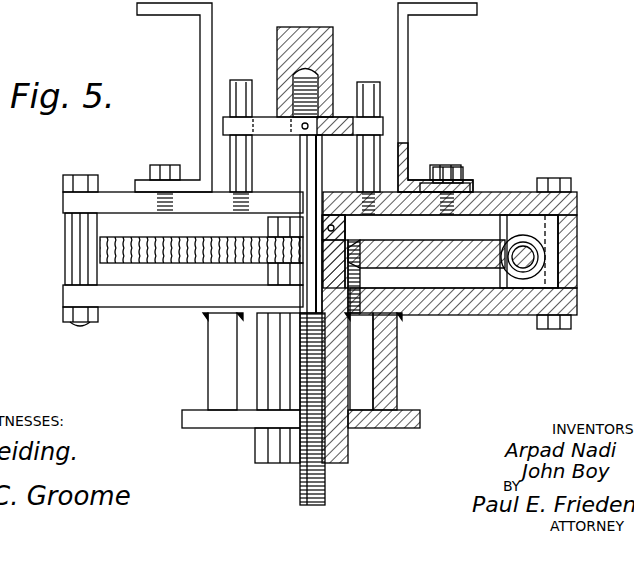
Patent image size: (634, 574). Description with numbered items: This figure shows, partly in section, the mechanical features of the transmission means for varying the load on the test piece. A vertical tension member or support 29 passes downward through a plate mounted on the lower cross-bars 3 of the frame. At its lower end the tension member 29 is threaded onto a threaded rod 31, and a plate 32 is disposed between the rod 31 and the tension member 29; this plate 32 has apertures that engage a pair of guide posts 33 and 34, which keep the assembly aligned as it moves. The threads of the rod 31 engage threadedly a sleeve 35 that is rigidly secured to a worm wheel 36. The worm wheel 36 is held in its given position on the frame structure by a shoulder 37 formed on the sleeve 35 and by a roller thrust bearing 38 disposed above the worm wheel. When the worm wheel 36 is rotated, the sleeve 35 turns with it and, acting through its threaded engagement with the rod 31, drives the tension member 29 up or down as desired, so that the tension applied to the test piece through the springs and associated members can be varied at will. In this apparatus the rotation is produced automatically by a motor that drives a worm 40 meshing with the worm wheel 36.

The lower cross-bars 3 is at (207, 35).
The tension member or support 29 is at (312, 28).
The threaded rod 31 is at (325, 500).
The plate 32 is at (338, 136).
The guide post 33 is at (245, 72).
The guide post 34 is at (365, 82).
The sleeve 35 is at (349, 458).
The worm wheel 36 is at (452, 260).
The shoulder 37 is at (360, 273).
The roller thrust bearing 38 is at (268, 219).
The worm 40 is at (540, 257).